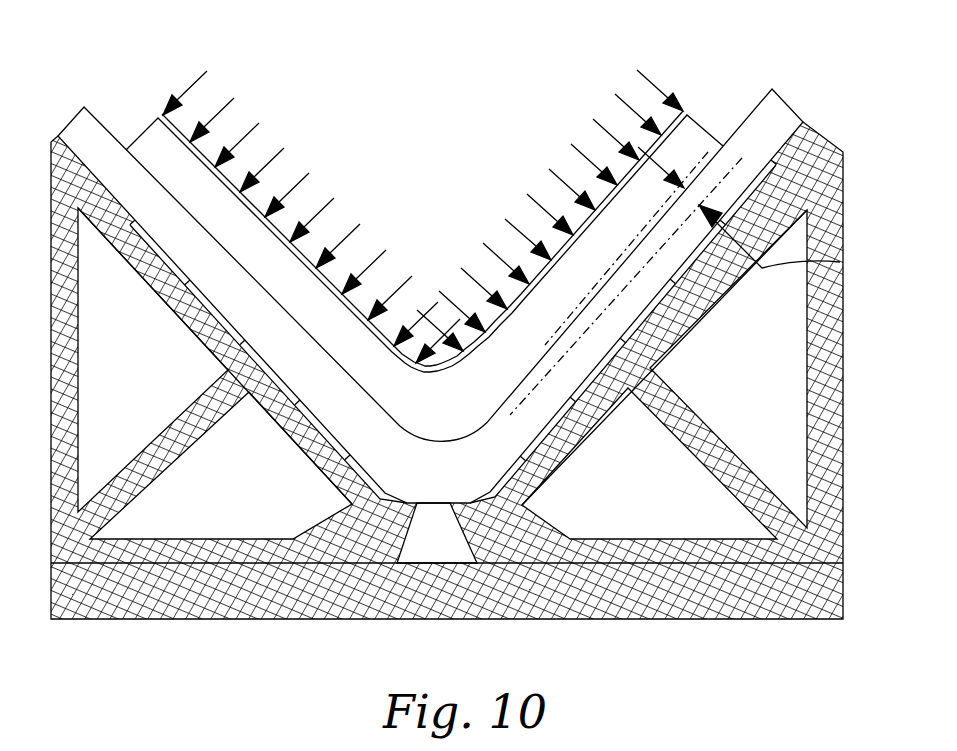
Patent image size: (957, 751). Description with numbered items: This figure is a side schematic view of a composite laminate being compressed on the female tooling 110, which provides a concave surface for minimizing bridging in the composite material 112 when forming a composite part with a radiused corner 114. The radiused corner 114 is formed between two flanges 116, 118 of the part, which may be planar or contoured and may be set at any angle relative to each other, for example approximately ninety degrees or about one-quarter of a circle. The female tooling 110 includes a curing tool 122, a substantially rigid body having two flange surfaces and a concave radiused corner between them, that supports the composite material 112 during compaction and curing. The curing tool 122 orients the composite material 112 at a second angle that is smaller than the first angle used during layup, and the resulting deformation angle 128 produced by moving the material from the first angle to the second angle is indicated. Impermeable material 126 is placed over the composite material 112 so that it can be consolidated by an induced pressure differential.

The female tooling 110 is at (861, 447).
The composite material 112 is at (690, 127).
The radiused corner 114 is at (445, 426).
The flange 116 is at (253, 260).
The flange 118 is at (598, 287).
The curing tool 122 is at (665, 641).
The impermeable material 126 is at (183, 127).
The deformation angle 128 is at (840, 262).